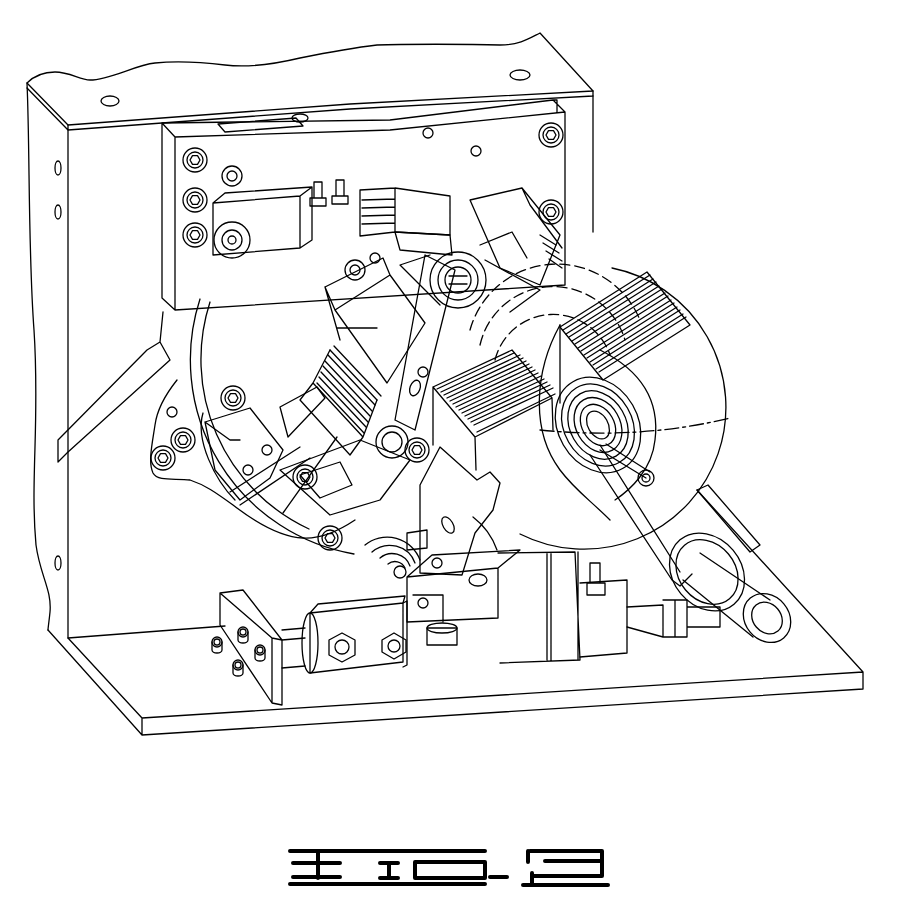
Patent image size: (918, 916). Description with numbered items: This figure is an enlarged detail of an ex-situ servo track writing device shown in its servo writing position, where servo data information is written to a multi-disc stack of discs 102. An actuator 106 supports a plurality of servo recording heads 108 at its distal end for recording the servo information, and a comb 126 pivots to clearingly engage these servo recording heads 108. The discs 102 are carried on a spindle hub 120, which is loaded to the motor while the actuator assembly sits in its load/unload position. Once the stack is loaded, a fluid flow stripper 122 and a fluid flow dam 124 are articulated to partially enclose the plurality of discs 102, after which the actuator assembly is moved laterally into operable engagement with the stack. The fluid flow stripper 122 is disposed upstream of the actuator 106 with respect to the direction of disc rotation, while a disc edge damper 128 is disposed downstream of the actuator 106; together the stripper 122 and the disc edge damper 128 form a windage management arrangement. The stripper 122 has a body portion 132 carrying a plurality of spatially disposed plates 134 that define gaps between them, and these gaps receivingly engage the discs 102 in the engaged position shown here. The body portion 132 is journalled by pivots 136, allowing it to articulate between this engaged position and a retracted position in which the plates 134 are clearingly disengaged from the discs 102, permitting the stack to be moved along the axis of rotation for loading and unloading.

The discs 102 is at (665, 300).
The actuator 106 is at (245, 490).
The servo recording heads 108 is at (597, 228).
The spindle hub 120 is at (727, 420).
The fluid flow stripper 122 is at (552, 512).
The fluid flow dam 124 is at (713, 465).
The comb 126 is at (425, 247).
The disc edge damper 128 is at (330, 341).
The body portion 132 is at (490, 515).
The plates 134 is at (665, 335).
The pivots 136 is at (437, 545).